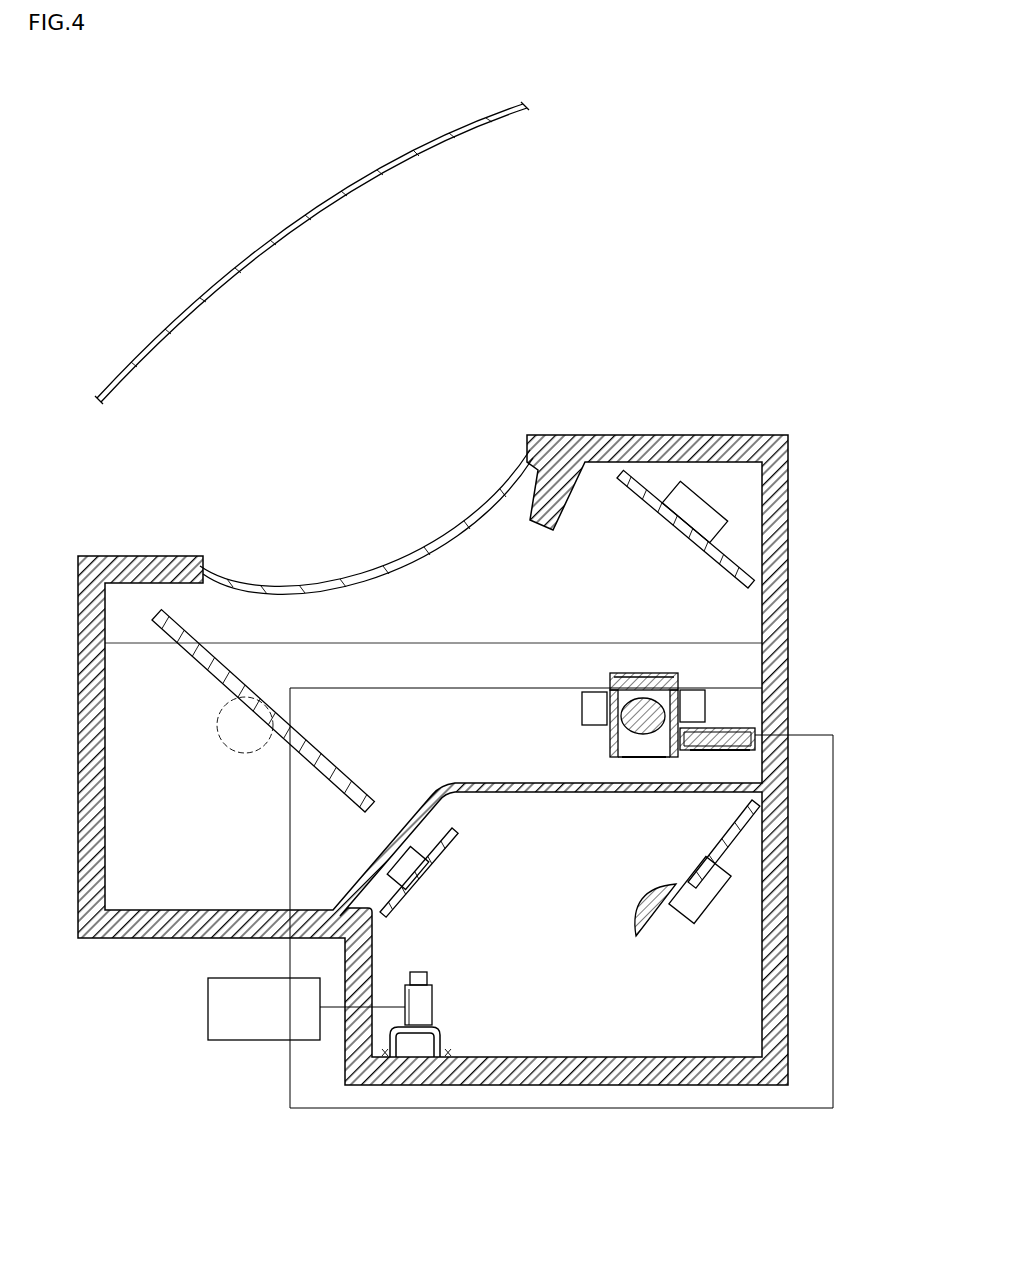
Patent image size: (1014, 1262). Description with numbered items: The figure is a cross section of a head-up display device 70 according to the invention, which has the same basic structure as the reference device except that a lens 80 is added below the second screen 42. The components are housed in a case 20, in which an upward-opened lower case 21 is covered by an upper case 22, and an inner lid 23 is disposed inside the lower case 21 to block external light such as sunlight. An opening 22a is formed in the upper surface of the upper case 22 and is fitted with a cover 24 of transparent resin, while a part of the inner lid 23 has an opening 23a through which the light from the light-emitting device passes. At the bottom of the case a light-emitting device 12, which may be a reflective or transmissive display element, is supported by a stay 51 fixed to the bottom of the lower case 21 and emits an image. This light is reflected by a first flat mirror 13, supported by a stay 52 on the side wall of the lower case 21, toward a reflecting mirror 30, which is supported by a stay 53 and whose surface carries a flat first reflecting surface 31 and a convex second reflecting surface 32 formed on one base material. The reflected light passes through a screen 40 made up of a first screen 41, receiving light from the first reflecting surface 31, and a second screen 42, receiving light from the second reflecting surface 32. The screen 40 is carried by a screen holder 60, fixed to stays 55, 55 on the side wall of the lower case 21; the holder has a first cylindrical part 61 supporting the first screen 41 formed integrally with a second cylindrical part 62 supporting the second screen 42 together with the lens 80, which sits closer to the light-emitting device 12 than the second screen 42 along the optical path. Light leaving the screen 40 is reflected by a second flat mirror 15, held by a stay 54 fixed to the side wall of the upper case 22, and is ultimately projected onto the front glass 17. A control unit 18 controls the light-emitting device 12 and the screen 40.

The light-emitting device 12 is at (432, 996).
The first flat mirror 13 is at (442, 842).
The second flat mirror 15 is at (735, 563).
The front glass 17 is at (282, 232).
The control unit 18 is at (265, 1042).
The case 20 is at (418, 760).
The lower case 21 is at (132, 938).
The upper case 22 is at (77, 628).
The opening 22a is at (208, 565).
The inner lid 23 is at (300, 905).
The opening 23a is at (636, 787).
The cover 24 is at (518, 490).
The reflecting mirror 30 is at (636, 874).
The first reflecting surface 31 is at (700, 866).
The second reflecting surface 32 is at (641, 912).
The screen 40 is at (652, 656).
The first screen 41 is at (745, 732).
The second screen 42 is at (655, 672).
The stay 51 is at (440, 1040).
The stay 52 is at (416, 880).
The stay 53 is at (703, 902).
The stay 54 is at (706, 500).
The stays 55 is at (694, 705).
The screen holder 60 is at (674, 800).
The first cylindrical part 61 is at (718, 752).
The second cylindrical part 62 is at (648, 752).
The head-up display device 70 is at (716, 240).
The lens 80 is at (630, 730).